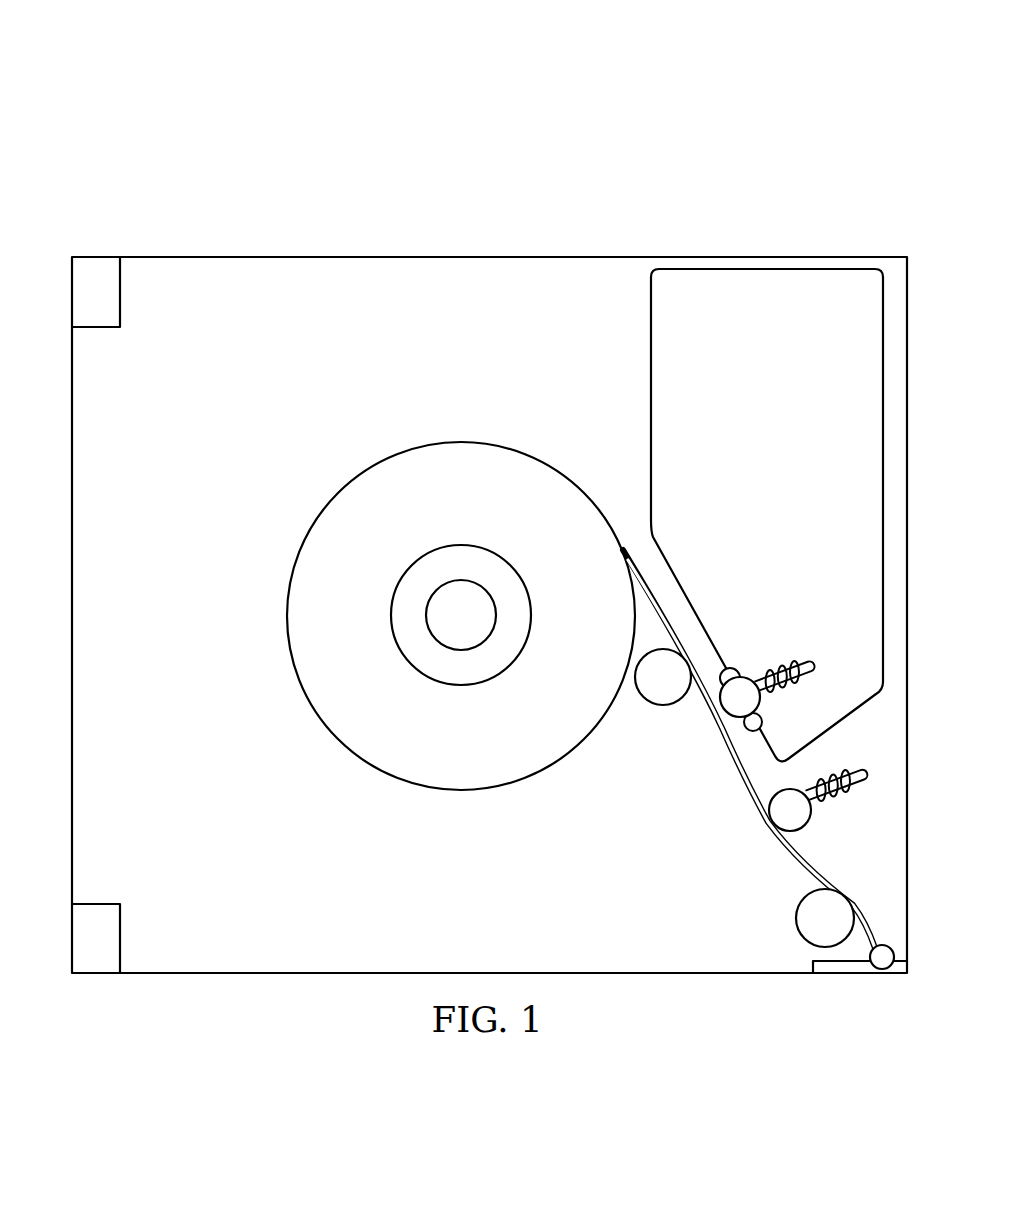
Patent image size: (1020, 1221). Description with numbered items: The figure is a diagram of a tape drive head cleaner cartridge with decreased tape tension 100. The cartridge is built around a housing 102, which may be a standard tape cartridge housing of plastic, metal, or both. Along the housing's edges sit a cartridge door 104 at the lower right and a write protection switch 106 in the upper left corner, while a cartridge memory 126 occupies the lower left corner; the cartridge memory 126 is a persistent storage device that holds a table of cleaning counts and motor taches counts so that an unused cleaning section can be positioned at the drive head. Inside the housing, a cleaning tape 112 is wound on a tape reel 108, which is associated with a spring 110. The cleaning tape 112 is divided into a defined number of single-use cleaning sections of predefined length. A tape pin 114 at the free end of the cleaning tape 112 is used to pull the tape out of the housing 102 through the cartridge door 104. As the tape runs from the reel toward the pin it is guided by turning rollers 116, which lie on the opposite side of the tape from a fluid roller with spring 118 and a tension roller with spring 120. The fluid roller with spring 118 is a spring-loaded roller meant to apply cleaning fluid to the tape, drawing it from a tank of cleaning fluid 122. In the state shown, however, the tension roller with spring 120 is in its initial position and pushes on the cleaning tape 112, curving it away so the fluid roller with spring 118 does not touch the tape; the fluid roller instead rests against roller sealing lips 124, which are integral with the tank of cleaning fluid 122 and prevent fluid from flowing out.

The tape drive head cleaner cartridge with decreased tape tension 100 is at (299, 150).
The housing 102 is at (486, 257).
The cartridge door 104 is at (828, 967).
The write protection switch 106 is at (95, 266).
The tape reel 108 is at (395, 455).
The spring 110 is at (428, 556).
The cleaning tape 112 is at (642, 585).
The tape pin 114 is at (885, 970).
The turning rollers 116 is at (652, 700).
The fluid roller with spring 118 is at (755, 670).
The tension roller with spring 120 is at (803, 840).
The tank of cleaning fluid 122 is at (768, 270).
The roller sealing lips 124 is at (753, 730).
The cartridge memory 126 is at (94, 962).